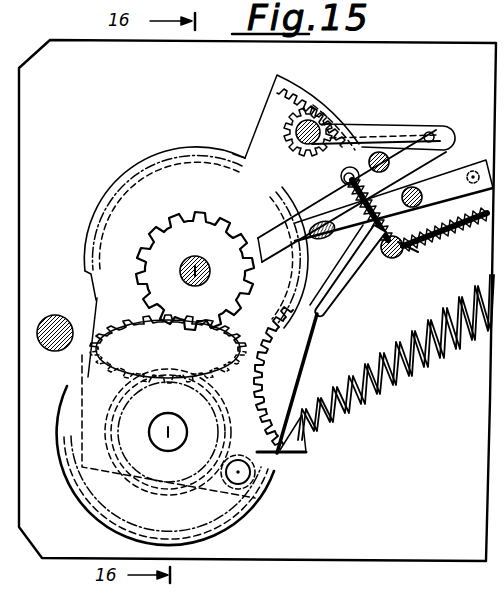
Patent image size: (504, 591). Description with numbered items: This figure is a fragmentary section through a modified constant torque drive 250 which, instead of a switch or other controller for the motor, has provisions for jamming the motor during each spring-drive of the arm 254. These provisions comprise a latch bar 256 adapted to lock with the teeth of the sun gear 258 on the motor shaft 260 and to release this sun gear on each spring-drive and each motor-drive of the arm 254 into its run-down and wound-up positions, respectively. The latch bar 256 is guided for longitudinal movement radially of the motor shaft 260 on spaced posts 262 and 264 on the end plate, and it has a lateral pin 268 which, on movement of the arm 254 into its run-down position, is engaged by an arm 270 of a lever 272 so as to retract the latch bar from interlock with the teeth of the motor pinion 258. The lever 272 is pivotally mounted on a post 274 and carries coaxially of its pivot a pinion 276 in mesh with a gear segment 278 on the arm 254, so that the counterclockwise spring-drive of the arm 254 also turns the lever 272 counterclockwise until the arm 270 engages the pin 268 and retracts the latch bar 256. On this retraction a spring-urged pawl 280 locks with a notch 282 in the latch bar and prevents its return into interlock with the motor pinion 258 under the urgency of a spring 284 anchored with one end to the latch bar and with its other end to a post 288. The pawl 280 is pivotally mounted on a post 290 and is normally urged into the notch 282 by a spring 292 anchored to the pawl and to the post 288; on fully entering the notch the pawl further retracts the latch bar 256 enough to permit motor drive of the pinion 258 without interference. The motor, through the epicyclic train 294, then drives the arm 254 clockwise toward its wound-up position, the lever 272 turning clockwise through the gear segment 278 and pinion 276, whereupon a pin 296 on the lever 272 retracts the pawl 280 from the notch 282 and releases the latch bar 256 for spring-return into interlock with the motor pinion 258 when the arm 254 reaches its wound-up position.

The constant torque drive 250 is at (193, 127).
The arm 254 is at (309, 352).
The latch bar 256 is at (349, 228).
The sun gear 258 is at (208, 218).
The motor shaft 260 is at (210, 283).
The post 262 is at (344, 181).
The post 264 is at (417, 204).
The lateral pin 268 is at (473, 170).
The arm 270 is at (360, 274).
The lever 272 is at (447, 136).
The post 274 is at (296, 129).
The pinion 276 is at (298, 148).
The gear segment 278 is at (282, 98).
The spring-urged pawl 280 is at (381, 171).
The notch 282 is at (352, 200).
The spring 284 is at (444, 232).
The post 288 is at (404, 256).
The post 290 is at (384, 156).
The spring 292 is at (390, 255).
The epicyclic train 294 is at (270, 365).
The pin 296 is at (429, 132).